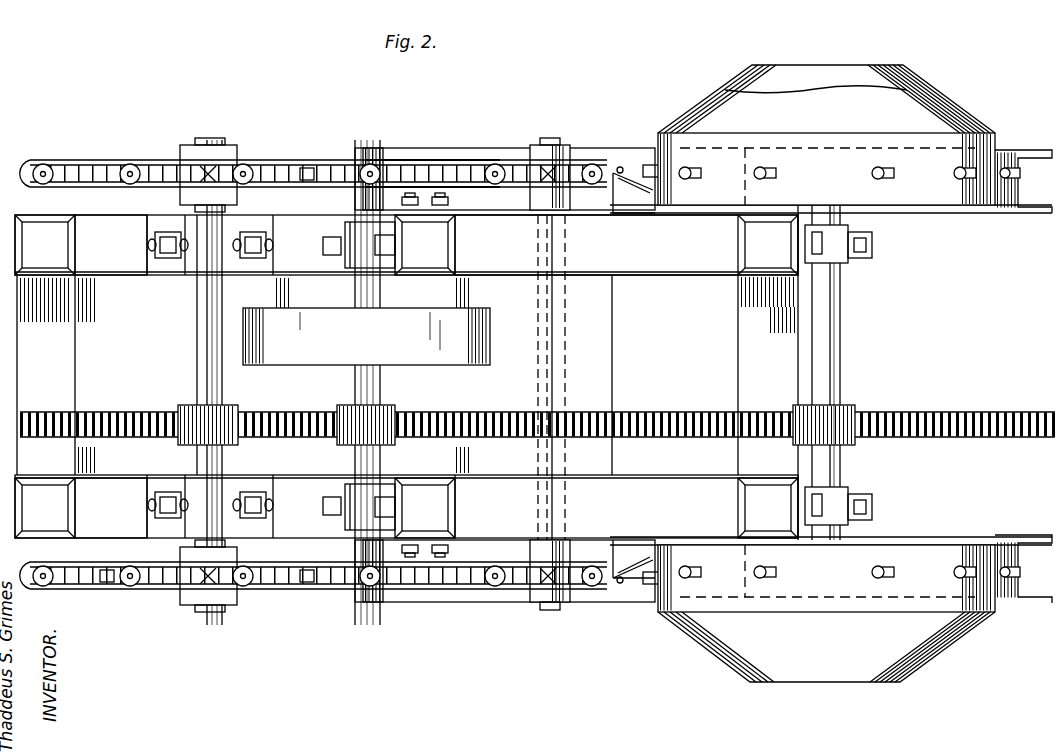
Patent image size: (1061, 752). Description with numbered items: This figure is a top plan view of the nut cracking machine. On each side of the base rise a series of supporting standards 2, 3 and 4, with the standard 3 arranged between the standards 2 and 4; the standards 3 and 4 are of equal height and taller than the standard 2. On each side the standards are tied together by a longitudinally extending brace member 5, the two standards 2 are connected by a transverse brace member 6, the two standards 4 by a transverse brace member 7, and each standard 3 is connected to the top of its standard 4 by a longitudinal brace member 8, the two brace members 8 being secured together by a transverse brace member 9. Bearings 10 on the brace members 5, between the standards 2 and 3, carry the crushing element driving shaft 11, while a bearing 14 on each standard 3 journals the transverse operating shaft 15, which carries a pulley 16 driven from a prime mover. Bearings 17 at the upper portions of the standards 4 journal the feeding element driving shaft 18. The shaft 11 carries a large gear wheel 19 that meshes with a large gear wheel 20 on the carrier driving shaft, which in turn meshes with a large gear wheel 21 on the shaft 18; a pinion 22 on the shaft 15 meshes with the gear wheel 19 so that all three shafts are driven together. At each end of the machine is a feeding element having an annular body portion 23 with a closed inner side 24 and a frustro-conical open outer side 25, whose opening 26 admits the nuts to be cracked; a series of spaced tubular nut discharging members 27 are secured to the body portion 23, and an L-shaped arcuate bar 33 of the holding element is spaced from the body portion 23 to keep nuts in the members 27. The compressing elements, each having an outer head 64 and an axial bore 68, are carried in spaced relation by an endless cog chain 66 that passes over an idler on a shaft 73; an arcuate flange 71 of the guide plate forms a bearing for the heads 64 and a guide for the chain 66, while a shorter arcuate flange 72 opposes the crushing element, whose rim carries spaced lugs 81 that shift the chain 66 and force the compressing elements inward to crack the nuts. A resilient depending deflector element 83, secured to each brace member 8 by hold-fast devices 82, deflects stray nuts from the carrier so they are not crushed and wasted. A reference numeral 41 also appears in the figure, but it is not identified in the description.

The supporting standard 2 is at (45, 376).
The supporting standard 3 is at (425, 376).
The supporting standard 4 is at (752, 255).
The longitudinally extending brace member 5 is at (121, 272).
The transversely disposed brace member 6 is at (46, 375).
The transversely extending brace member 7 is at (752, 345).
The longitudinally disposed brace member 8 is at (596, 245).
The transversely extending brace member 9 is at (606, 316).
The bearing 10 is at (176, 272).
The crushing or cracking element driving shaft 11 is at (200, 355).
The bearing 14 is at (355, 258).
The operating shaft 15 is at (380, 296).
The pulley 16 is at (428, 355).
The bearing 17 is at (842, 262).
The feeding element driving shaft 18 is at (827, 350).
The gear wheel 19 is at (168, 406).
The gear wheel 20 is at (494, 412).
The gear wheel 21 is at (945, 400).
The pinion 22 is at (347, 410).
The annular body portion 23 is at (840, 130).
The closed inner side 24 is at (908, 215).
The frustro-conical open outer side 25 is at (958, 124).
The opening 26 is at (856, 64).
The tubular nut discharging member 27 is at (686, 172).
The arcuate bar 33 is at (1020, 198).
The chain run 41 is at (515, 588).
The outer head 64 is at (132, 170).
The endless cog chain 66 is at (473, 165).
The axial bore 68 is at (46, 166).
The arcuate flange 71 is at (417, 158).
The arcuate flange 72 is at (362, 158).
The shaft 73 is at (548, 608).
The lug 81 is at (306, 165).
The hold-fast device 82 is at (630, 387).
The depending deflector element 83 is at (621, 180).